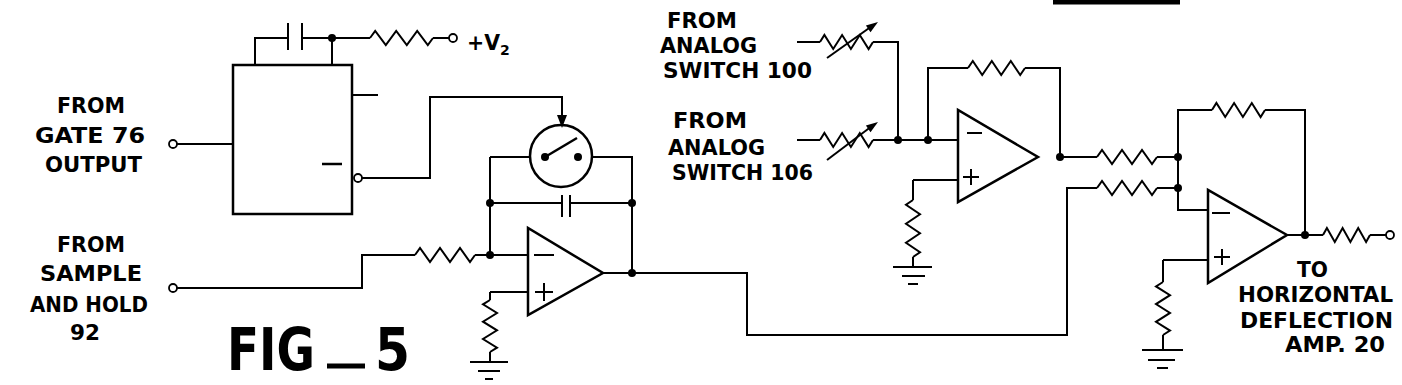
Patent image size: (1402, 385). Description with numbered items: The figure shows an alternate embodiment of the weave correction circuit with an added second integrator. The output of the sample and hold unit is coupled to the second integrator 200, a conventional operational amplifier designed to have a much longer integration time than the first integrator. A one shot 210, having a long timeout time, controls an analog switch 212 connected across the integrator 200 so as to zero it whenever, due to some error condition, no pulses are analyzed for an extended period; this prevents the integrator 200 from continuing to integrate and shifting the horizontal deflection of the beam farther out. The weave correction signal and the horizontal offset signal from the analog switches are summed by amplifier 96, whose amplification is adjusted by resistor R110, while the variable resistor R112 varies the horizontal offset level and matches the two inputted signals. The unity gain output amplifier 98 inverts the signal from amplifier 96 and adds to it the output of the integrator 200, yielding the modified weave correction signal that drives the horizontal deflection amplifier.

The one shot 210 is at (232, 90).
The analog switch 212 is at (533, 136).
The second integrator 200 is at (575, 295).
The resistor R110 is at (849, 29).
The variable resistor R112 is at (849, 128).
The amplifier 96 is at (1000, 178).
The unity gain output amplifier 98 is at (1250, 213).